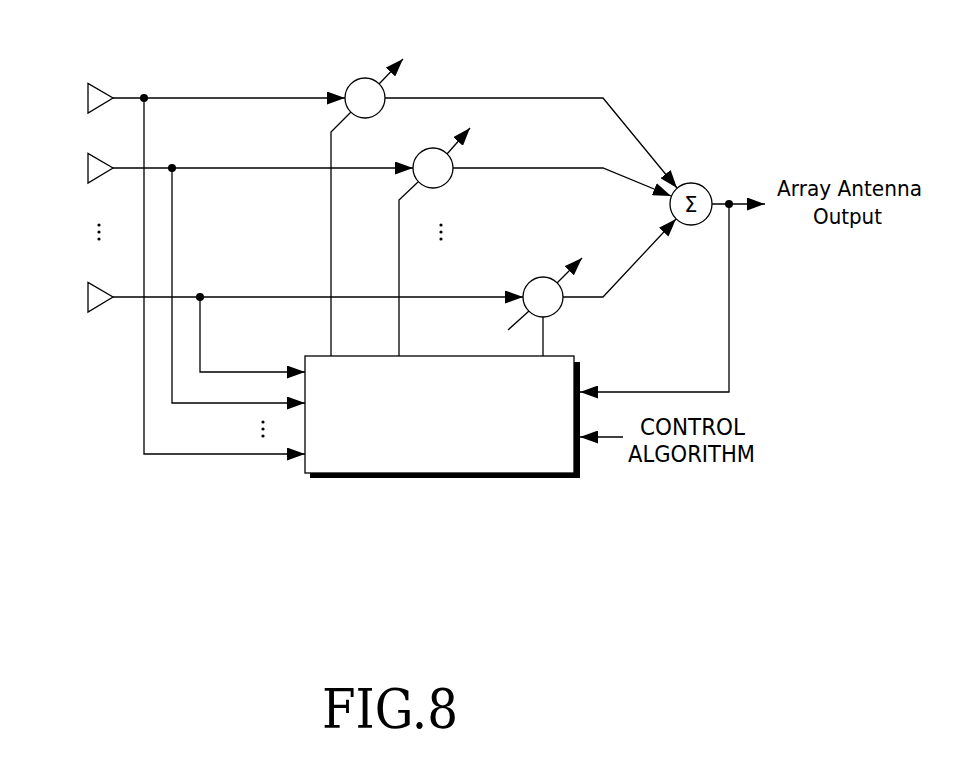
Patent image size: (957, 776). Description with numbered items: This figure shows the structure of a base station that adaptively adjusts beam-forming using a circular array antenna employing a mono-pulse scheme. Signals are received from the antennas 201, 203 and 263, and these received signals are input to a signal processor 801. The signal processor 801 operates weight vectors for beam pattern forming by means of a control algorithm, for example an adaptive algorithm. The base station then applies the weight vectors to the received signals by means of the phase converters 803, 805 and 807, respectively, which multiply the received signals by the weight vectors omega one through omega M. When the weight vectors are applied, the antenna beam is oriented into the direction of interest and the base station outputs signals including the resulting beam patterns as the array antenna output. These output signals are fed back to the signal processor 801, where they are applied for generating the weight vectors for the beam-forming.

The antenna 201 is at (85, 98).
The antenna 203 is at (85, 168).
The antenna 263 is at (85, 297).
The signal processor 801 is at (443, 479).
The phase converter 803 is at (364, 78).
The phase converter 805 is at (433, 148).
The phase converter 807 is at (541, 277).